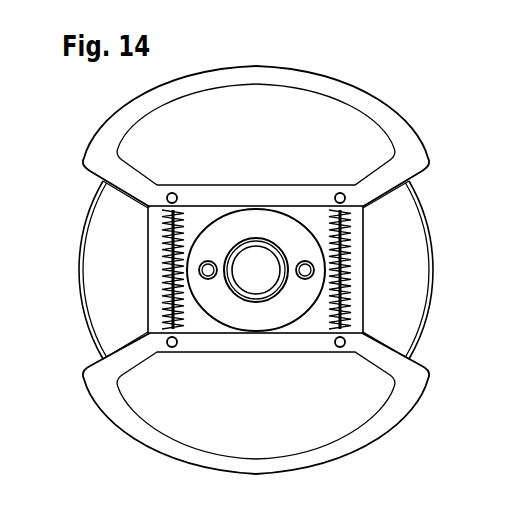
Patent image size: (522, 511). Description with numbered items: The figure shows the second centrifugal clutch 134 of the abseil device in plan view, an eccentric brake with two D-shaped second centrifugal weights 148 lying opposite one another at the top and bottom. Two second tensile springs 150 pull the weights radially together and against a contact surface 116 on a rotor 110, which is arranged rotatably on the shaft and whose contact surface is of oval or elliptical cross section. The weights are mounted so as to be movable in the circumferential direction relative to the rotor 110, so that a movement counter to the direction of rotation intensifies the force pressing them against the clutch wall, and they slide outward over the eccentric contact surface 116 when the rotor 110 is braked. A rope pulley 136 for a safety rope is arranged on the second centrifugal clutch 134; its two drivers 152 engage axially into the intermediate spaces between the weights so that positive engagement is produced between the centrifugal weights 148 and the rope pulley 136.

The rotor 110 is at (242, 312).
The contact surface 116 is at (300, 312).
The second centrifugal clutch 134 is at (335, 75).
The rope pulley 136 is at (425, 222).
The second centrifugal weights 148 is at (378, 118).
The second tensile springs 150 is at (163, 270).
The drivers 152 is at (103, 221).